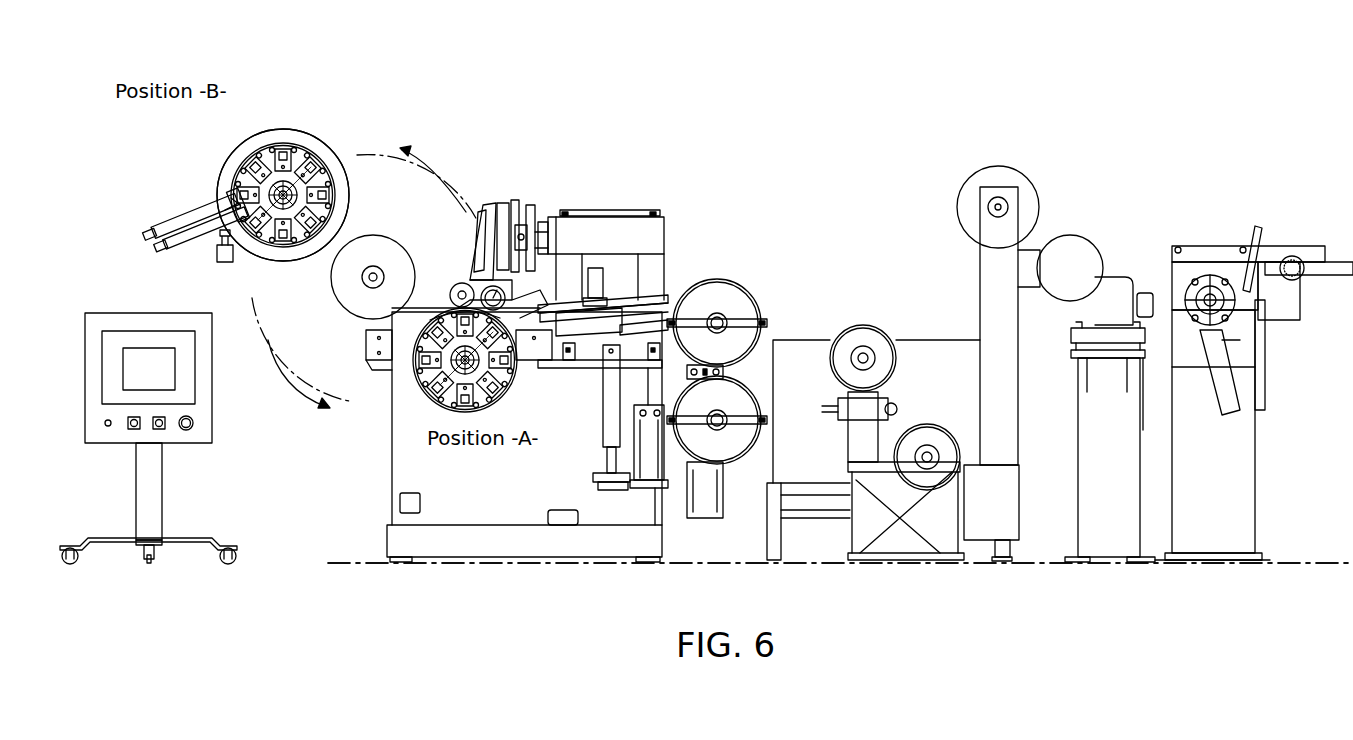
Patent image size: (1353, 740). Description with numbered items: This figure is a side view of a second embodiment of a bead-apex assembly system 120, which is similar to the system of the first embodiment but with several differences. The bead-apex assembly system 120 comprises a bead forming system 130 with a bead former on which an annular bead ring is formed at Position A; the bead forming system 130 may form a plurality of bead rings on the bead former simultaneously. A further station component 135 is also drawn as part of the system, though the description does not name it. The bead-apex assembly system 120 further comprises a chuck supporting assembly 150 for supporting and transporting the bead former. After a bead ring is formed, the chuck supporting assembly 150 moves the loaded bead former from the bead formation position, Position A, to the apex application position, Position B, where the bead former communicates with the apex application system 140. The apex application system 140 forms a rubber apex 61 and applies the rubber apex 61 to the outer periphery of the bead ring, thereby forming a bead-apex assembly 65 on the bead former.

The bead-apex assembly system 120 is at (740, 107).
The bead forming system 130 is at (602, 212).
The feed roller 135 is at (1083, 242).
The apex application system 140 is at (168, 205).
The chuck supporting assembly 150 is at (405, 247).
The rubber apex 61 is at (232, 158).
The bead-apex assembly 65 is at (320, 131).